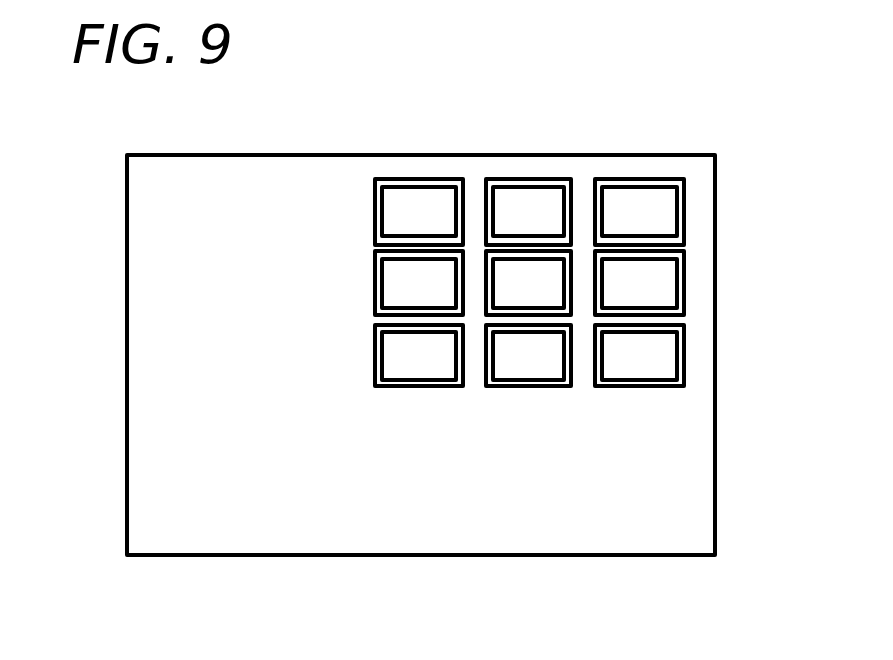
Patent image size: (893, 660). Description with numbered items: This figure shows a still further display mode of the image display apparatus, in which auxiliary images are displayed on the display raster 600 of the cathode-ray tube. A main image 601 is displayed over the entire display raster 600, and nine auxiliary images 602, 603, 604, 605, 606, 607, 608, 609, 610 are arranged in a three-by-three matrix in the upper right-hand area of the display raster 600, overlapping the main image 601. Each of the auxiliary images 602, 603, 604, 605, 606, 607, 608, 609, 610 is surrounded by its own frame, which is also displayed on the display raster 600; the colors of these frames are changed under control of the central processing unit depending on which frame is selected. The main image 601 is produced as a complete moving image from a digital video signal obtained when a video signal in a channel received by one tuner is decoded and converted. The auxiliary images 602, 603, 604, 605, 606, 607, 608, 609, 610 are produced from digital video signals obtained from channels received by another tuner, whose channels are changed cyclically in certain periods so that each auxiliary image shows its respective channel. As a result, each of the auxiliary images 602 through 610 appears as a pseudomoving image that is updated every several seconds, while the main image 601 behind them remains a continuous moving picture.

The display raster 600 is at (660, 610).
The main image 601 is at (182, 463).
The auxiliary image 602 is at (418, 177).
The auxiliary image 603 is at (515, 177).
The auxiliary image 604 is at (628, 177).
The auxiliary image 605 is at (373, 277).
The auxiliary image 606 is at (574, 277).
The auxiliary image 607 is at (685, 280).
The auxiliary image 608 is at (373, 349).
The auxiliary image 609 is at (573, 347).
The auxiliary image 610 is at (645, 388).